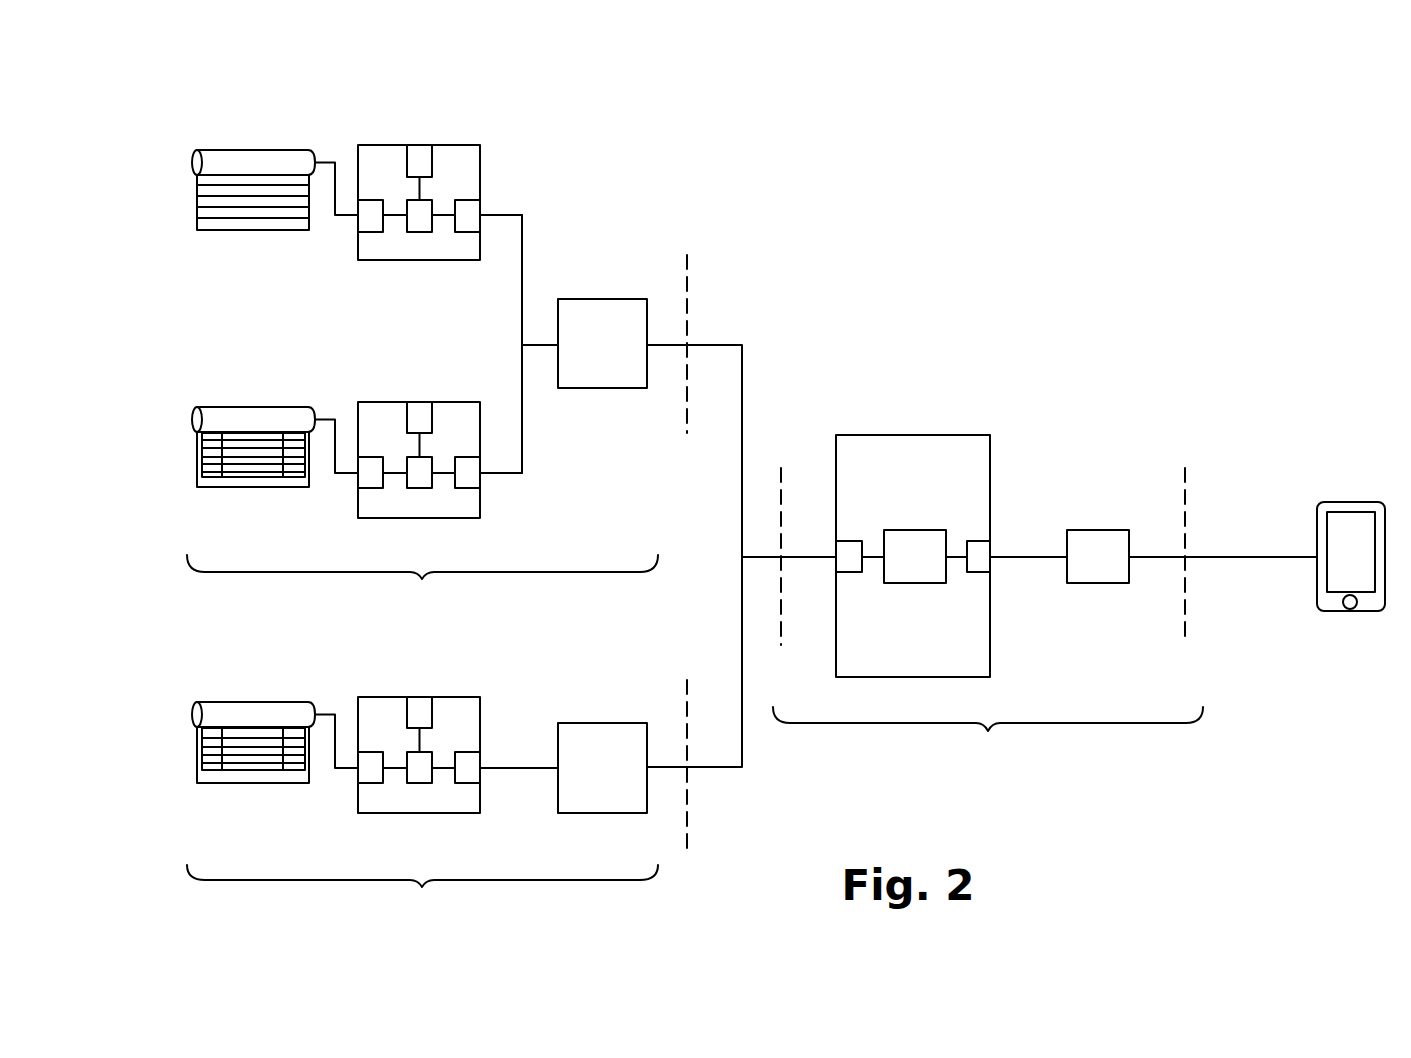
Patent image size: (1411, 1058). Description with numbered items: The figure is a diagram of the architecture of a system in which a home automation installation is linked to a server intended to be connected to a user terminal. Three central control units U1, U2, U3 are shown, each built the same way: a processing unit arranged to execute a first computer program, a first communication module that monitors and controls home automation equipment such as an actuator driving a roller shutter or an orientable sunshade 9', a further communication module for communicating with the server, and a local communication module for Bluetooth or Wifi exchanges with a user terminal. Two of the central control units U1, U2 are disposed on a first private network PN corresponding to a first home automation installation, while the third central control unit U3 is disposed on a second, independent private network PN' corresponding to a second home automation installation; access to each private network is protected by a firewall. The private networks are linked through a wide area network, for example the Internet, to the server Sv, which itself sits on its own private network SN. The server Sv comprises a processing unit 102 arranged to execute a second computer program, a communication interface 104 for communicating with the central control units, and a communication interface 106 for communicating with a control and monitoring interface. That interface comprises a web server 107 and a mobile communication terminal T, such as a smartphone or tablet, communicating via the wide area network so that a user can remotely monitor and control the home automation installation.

The orientable sunshade 9' is at (226, 459).
The central control unit U1 is at (463, 145).
The central control unit U2 is at (460, 410).
The central control unit U3 is at (460, 705).
The private network PN is at (422, 584).
The second private network PN' is at (422, 893).
The private network SN is at (988, 736).
The server Sv is at (937, 435).
The communication interface 104 is at (850, 545).
The processing unit 102 is at (905, 585).
The communication interface 106 is at (975, 574).
The web server 107 is at (1081, 574).
The mobile communication terminal T is at (1335, 612).